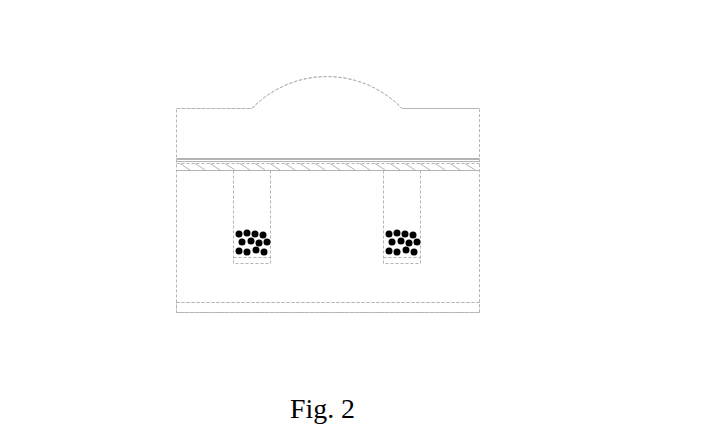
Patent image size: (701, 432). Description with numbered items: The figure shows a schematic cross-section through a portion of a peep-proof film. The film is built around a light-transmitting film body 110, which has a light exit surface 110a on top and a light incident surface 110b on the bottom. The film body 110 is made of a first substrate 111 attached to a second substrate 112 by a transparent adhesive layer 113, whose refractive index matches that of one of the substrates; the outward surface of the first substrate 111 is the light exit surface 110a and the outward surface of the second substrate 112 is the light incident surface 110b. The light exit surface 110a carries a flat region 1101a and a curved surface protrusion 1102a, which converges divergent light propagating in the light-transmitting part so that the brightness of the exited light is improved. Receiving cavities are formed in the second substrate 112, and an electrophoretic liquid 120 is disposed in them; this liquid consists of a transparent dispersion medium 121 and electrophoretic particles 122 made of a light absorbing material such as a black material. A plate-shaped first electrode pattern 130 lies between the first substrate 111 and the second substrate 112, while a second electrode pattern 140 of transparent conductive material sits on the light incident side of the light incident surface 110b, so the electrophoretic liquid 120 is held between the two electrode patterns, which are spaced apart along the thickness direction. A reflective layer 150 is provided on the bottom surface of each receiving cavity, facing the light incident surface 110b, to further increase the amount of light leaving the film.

The film body 110 is at (75, 178).
The light exit surface 110a is at (328, 54).
The flat portion of top surface 1101a is at (215, 108).
The curved surface protrusion 1102a is at (312, 77).
The light incident surface 110b is at (200, 303).
The first substrate 111 is at (176, 143).
The second substrate 112 is at (195, 208).
The transparent adhesive layer 113 is at (176, 165).
The first electrode pattern 130 is at (467, 160).
The electrophoretic liquid 120 is at (430, 217).
The dispersion medium 121 is at (410, 203).
The electrophoretic particles 122 is at (423, 254).
The second electrode pattern 140 is at (437, 302).
The reflective layer 150 is at (400, 333).